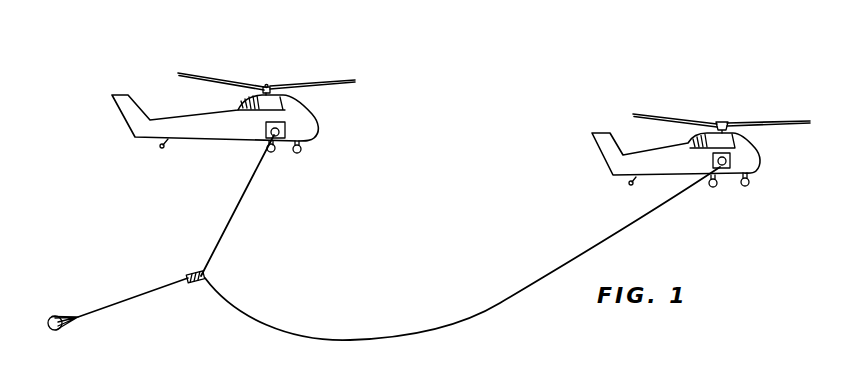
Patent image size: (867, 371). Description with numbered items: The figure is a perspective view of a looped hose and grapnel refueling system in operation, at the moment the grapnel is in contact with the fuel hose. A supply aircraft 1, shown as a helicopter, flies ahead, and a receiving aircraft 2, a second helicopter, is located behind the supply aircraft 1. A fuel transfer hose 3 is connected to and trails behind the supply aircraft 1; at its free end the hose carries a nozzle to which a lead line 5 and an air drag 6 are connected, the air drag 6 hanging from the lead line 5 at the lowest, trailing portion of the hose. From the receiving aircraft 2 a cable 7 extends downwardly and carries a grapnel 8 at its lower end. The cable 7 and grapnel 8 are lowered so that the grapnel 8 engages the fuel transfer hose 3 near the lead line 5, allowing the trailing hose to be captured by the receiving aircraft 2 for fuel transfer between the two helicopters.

The supply aircraft 1 is at (610, 158).
The receiving aircraft 2 is at (133, 120).
The fuel transfer hose 3 is at (502, 305).
The lead line 5 is at (130, 301).
The air drag 6 is at (56, 333).
The cable 7 is at (232, 223).
The grapnel 8 is at (203, 285).